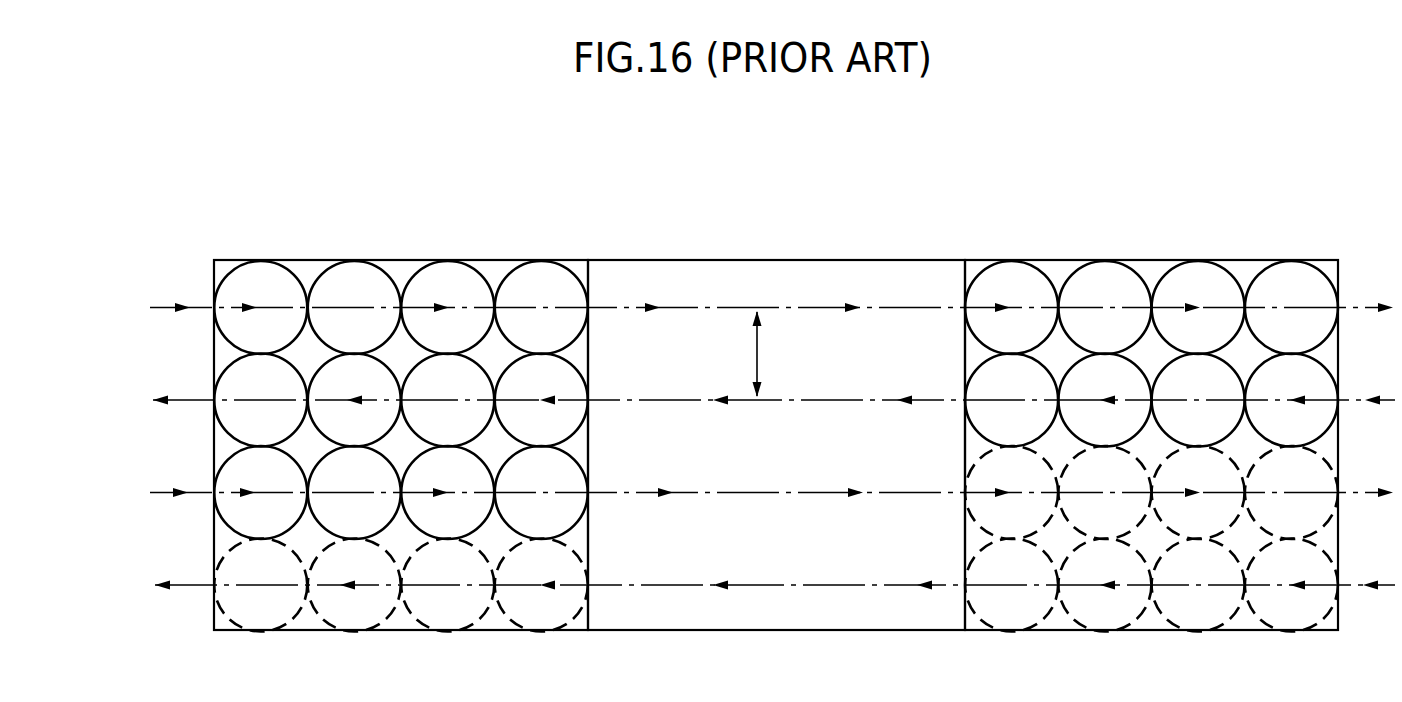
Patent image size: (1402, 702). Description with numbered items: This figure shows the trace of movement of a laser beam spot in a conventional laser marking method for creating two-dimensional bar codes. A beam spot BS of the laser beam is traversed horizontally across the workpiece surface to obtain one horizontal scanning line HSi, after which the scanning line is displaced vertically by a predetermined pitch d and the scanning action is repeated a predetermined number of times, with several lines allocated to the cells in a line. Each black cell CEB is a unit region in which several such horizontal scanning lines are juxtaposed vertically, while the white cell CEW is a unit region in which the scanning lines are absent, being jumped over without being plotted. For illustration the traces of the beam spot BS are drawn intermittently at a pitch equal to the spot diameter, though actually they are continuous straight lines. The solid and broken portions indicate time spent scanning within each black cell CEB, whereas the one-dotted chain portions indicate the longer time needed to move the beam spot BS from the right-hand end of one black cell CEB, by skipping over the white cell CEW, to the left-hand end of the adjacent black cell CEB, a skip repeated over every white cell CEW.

The beam spot BS is at (355, 272).
The black cell CEB is at (483, 260).
The white cell CEW is at (820, 275).
The horizontal scanning line HSi is at (741, 304).
The pitch d is at (770, 354).